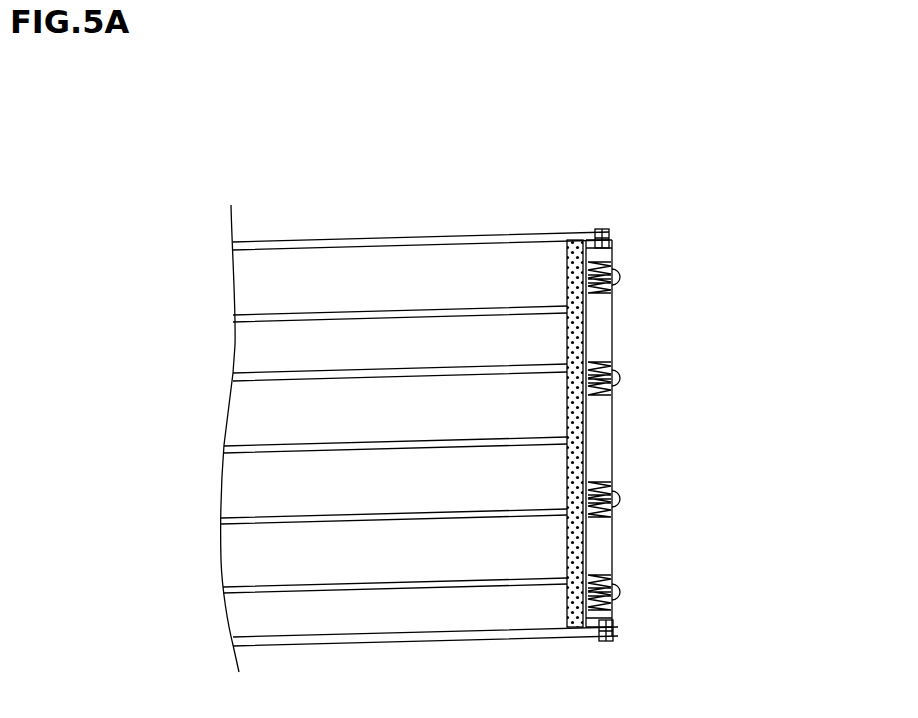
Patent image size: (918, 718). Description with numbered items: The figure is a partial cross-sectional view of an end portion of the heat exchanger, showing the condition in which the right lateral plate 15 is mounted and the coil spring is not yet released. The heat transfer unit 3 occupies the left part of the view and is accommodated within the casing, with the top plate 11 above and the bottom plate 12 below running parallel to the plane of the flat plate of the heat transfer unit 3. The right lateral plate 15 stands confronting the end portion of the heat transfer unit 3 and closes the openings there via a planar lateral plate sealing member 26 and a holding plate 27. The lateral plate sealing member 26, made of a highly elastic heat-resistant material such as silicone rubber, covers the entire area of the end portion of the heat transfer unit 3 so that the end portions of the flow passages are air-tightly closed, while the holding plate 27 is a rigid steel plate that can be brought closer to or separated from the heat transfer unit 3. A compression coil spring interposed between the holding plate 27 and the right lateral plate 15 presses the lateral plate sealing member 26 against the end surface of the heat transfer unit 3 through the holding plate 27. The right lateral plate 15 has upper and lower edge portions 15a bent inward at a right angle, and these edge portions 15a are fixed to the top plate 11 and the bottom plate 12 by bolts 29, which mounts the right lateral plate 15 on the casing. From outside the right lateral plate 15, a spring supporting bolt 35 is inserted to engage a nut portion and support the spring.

The heat transfer unit 3 is at (452, 280).
The top plate 11 is at (322, 241).
The bottom plate 12 is at (325, 646).
The right lateral plate 15 is at (613, 344).
The edge portion 15a is at (613, 252).
The lateral plate sealing member 26 is at (585, 335).
The holding plate 27 is at (590, 452).
The bolt 29 is at (599, 232).
The spring supporting bolt 35 is at (618, 379).